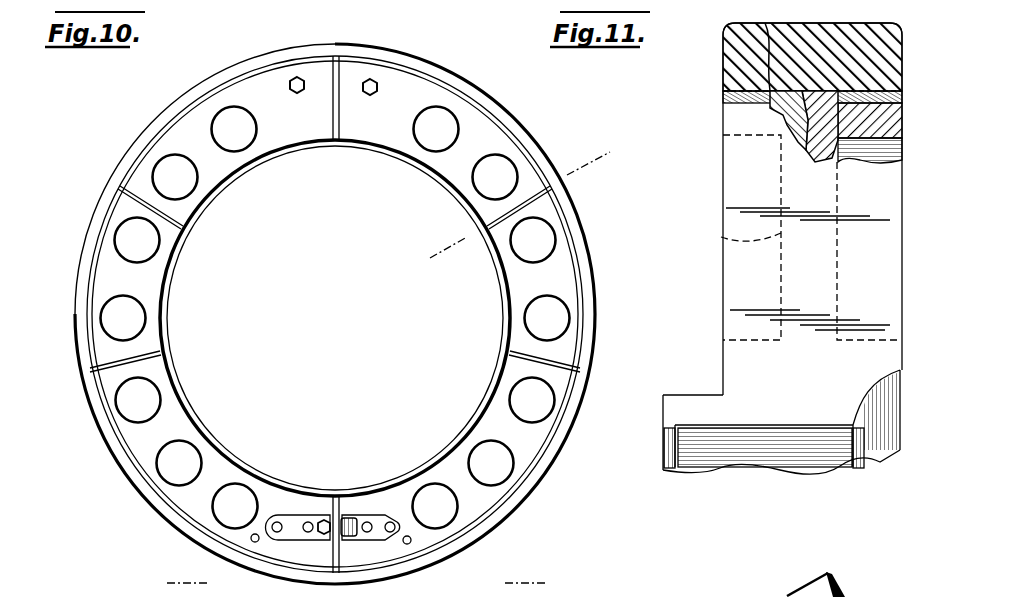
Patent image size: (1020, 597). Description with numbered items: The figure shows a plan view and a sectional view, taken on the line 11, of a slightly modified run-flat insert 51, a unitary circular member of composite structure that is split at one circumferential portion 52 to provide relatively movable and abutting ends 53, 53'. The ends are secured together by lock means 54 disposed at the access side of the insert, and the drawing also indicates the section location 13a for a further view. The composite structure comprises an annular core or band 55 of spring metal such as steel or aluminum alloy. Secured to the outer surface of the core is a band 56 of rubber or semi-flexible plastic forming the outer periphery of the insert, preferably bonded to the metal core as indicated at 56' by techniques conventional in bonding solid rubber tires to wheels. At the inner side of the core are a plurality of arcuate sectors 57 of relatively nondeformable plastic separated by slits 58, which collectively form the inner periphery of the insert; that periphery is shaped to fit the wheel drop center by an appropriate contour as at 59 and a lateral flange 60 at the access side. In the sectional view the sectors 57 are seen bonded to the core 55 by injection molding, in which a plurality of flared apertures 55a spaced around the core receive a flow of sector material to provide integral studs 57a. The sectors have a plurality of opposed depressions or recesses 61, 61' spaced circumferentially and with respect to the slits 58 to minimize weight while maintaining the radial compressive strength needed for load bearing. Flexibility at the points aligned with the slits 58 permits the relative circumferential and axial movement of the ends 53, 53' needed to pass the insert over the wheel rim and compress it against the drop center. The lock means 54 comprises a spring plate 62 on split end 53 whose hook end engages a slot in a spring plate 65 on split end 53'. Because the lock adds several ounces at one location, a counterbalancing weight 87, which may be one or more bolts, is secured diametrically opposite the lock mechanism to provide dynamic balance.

In FIG. 10, the run-flat insert 51 is at (505, 107).
In FIG. 11, the run-flat insert 51 is at (712, 152).
In FIG. 10, the circumferential portion 52 is at (333, 480).
In FIG. 10, the split end 53 is at (267, 448).
In FIG. 10, the split end 53' is at (402, 447).
In FIG. 10, the lock means 54 is at (290, 547).
In FIG. 10, the annular core 55 is at (140, 442).
In FIG. 11, the annular core 55 is at (723, 100).
In FIG. 11, the flared apertures 55a is at (857, 163).
In FIG. 10, the outer band 56 is at (342, 296).
In FIG. 11, the outer band 56 is at (771, 57).
In FIG. 11, the bond 56' is at (771, 63).
In FIG. 10, the arcuate sectors 57 is at (187, 137).
In FIG. 11, the arcuate sectors 57 is at (902, 115).
In FIG. 11, the integral studs 57a is at (800, 150).
In FIG. 10, the slits 58 is at (333, 115).
In FIG. 11, the slits 58 is at (792, 385).
In FIG. 11, the contour 59 is at (873, 388).
In FIG. 10, the lateral flange 60 is at (195, 380).
In FIG. 11, the lateral flange 60 is at (688, 393).
In FIG. 10, the depressions 61 is at (364, 318).
In FIG. 11, the depressions 61 is at (785, 237).
In FIG. 11, the depressions 61' is at (887, 169).
In FIG. 10, the spring plate 62 is at (300, 515).
In FIG. 10, the spring plate 65 is at (350, 512).
In FIG. 10, the counterbalancing weight 87 is at (366, 80).
In FIG. 10, the section line 11 is at (612, 193).
In FIG. 10, the section line 13a is at (167, 583).